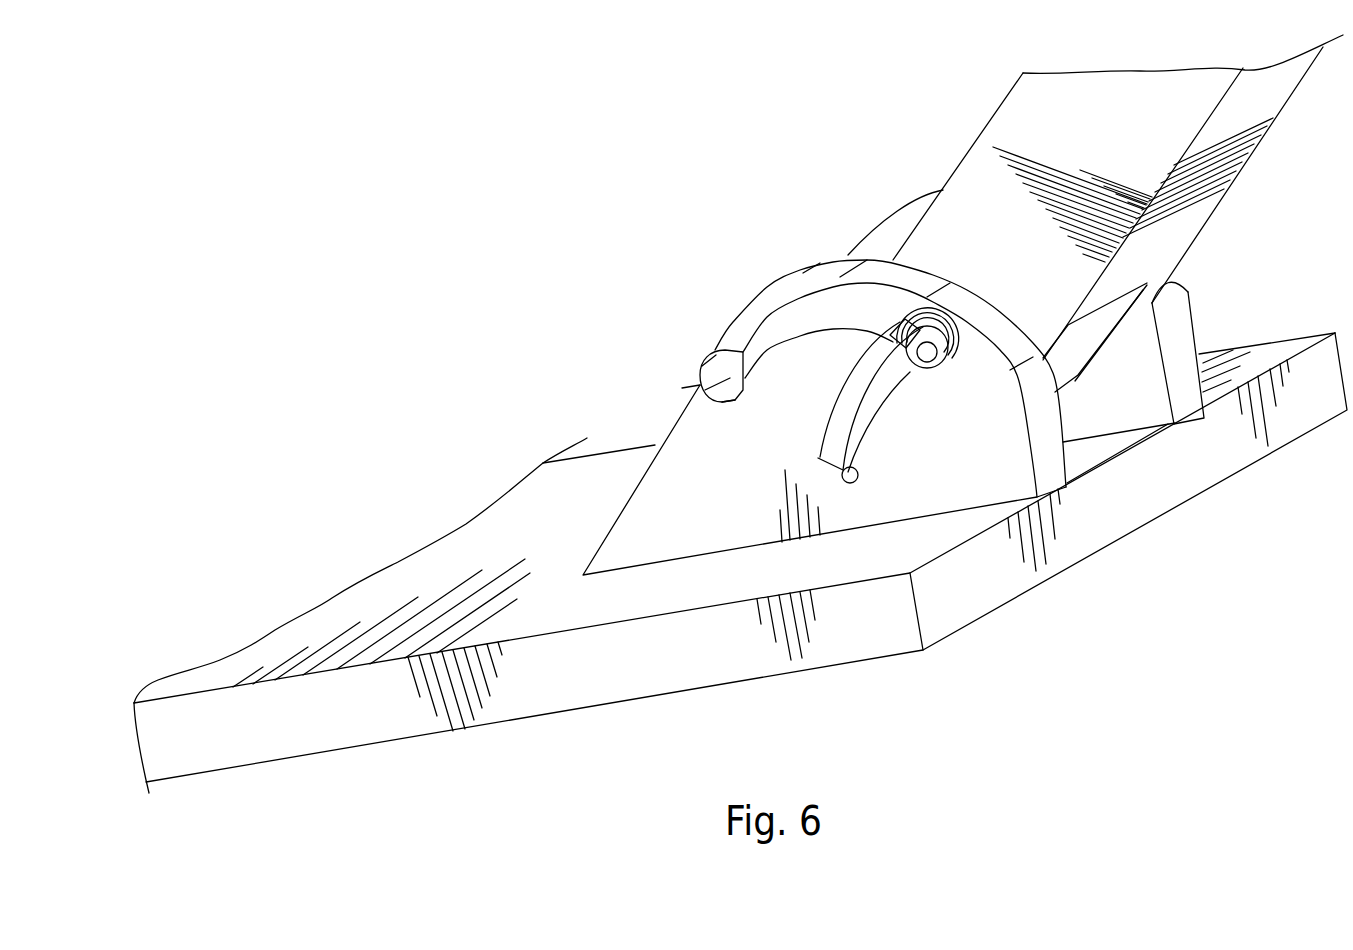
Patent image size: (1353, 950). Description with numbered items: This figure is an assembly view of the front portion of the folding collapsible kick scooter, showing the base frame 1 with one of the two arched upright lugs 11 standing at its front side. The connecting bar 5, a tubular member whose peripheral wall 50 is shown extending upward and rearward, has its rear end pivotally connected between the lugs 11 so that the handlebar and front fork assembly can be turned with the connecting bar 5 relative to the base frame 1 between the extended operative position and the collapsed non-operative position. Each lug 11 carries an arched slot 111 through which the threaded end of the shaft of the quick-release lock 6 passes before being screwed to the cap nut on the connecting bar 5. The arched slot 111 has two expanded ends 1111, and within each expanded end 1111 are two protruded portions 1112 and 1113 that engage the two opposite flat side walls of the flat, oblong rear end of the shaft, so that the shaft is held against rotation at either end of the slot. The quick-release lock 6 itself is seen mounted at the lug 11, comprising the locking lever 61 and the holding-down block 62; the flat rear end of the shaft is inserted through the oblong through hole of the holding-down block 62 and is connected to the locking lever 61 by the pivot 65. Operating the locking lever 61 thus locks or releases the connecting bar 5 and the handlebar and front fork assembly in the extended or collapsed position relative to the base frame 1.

The base frame 1 is at (1190, 510).
The arched upright lug 11 is at (1197, 323).
The arched slot 111 is at (802, 308).
The expanded end 1111 is at (683, 387).
The protruded portion 1112 is at (728, 361).
The protruded portion 1113 is at (730, 402).
The connecting bar 5 is at (1262, 153).
The peripheral wall 50 is at (1162, 229).
The quick-release lock 6 is at (872, 395).
The locking lever 61 is at (862, 441).
The holding-down block 62 is at (958, 340).
The pivot 65 is at (925, 362).